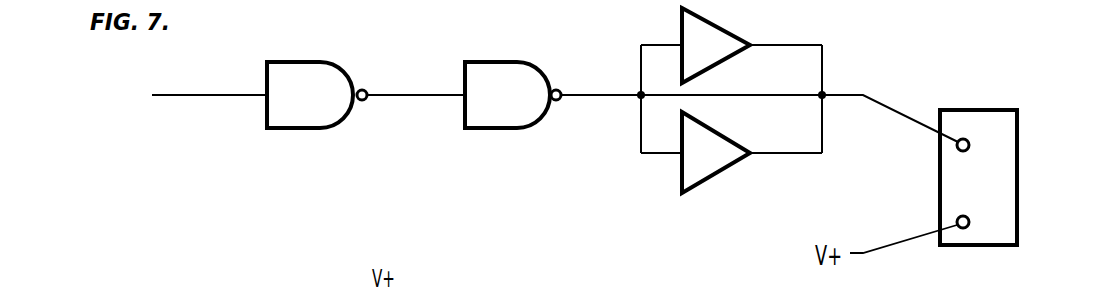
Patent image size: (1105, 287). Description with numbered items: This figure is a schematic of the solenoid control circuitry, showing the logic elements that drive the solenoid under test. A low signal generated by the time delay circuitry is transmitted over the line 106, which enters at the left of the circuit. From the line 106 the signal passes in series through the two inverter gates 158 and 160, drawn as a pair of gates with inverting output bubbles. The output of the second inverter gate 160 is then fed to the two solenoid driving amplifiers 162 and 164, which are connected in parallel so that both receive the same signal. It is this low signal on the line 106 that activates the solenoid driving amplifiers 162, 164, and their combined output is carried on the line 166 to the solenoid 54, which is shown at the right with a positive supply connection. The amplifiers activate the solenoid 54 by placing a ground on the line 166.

The line 106 is at (204, 94).
The inverter gate 158 is at (308, 60).
The inverter gate 160 is at (507, 60).
The solenoid driving amplifier 162 is at (715, 24).
The solenoid driving amplifier 164 is at (709, 127).
The line 166 is at (891, 77).
The solenoid 54 is at (1008, 161).